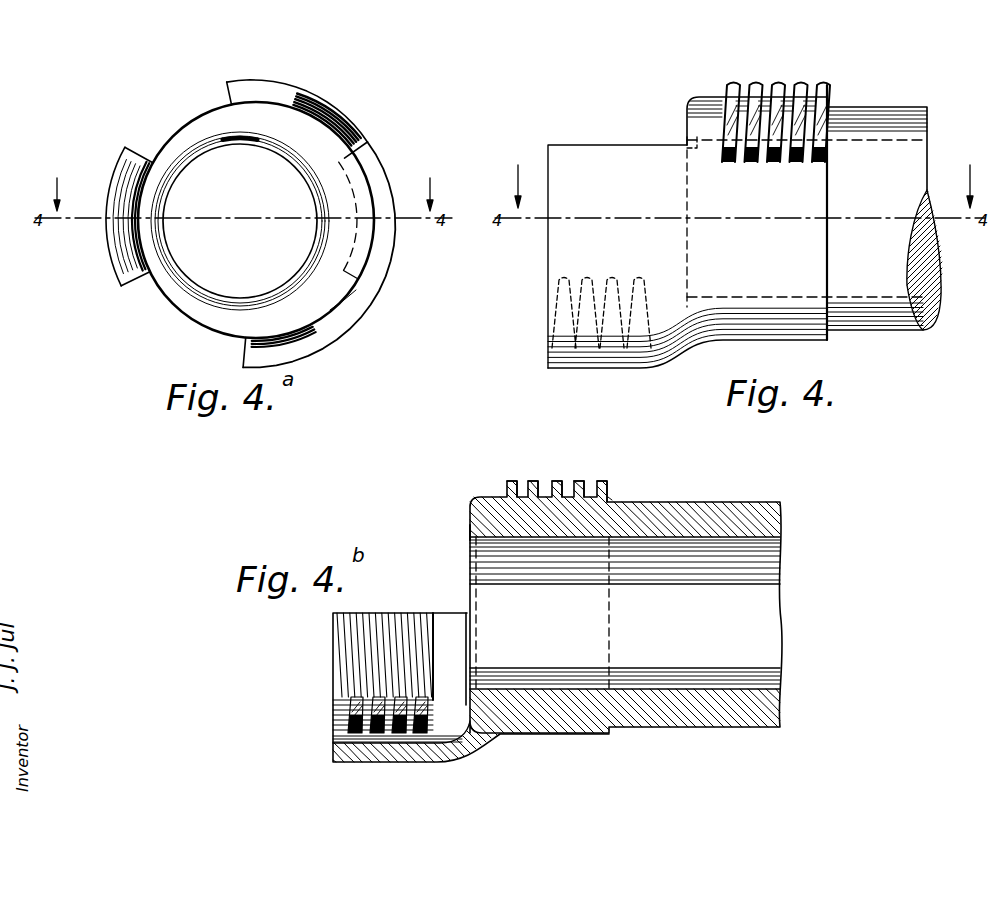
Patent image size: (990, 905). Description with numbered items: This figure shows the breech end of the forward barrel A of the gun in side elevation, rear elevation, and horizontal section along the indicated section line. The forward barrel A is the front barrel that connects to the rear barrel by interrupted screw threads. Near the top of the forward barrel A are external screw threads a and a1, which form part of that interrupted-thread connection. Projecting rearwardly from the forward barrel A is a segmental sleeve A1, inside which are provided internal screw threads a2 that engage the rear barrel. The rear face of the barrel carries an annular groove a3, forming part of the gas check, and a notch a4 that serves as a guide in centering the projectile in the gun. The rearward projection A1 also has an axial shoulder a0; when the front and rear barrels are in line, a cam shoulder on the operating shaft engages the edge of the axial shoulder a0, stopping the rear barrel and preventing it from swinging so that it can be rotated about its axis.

In FIG. 4A, the forward barrel A is at (147, 292).
In FIG. 4, the forward barrel A is at (920, 107).
In FIG. 4B, the forward barrel A is at (768, 602).
In FIG. 4A, the segmental sleeve A1 is at (375, 272).
In FIG. 4, the segmental sleeve A1 is at (570, 147).
In FIG. 4B, the segmental sleeve A1 is at (400, 763).
In FIG. 4A, the external screw thread a is at (310, 113).
In FIG. 4, the external screw thread a is at (820, 86).
In FIG. 4A, the external screw thread a1 is at (116, 184).
In FIG. 4B, the external screw thread a1 is at (557, 481).
In FIG. 4A, the internal screw threads a2 is at (330, 310).
In FIG. 4, the internal screw threads a2 is at (548, 291).
In FIG. 4B, the internal screw threads a2 is at (351, 672).
In FIG. 4A, the annular groove a3 is at (193, 300).
In FIG. 4, the annular groove a3 is at (686, 138).
In FIG. 4B, the annular groove a3 is at (469, 528).
In FIG. 4A, the notch a4 is at (244, 144).
In FIG. 4, the notch a4 is at (683, 156).
In FIG. 4A, the axial shoulder a0 is at (243, 350).
In FIG. 4B, the axial shoulder a0 is at (376, 613).